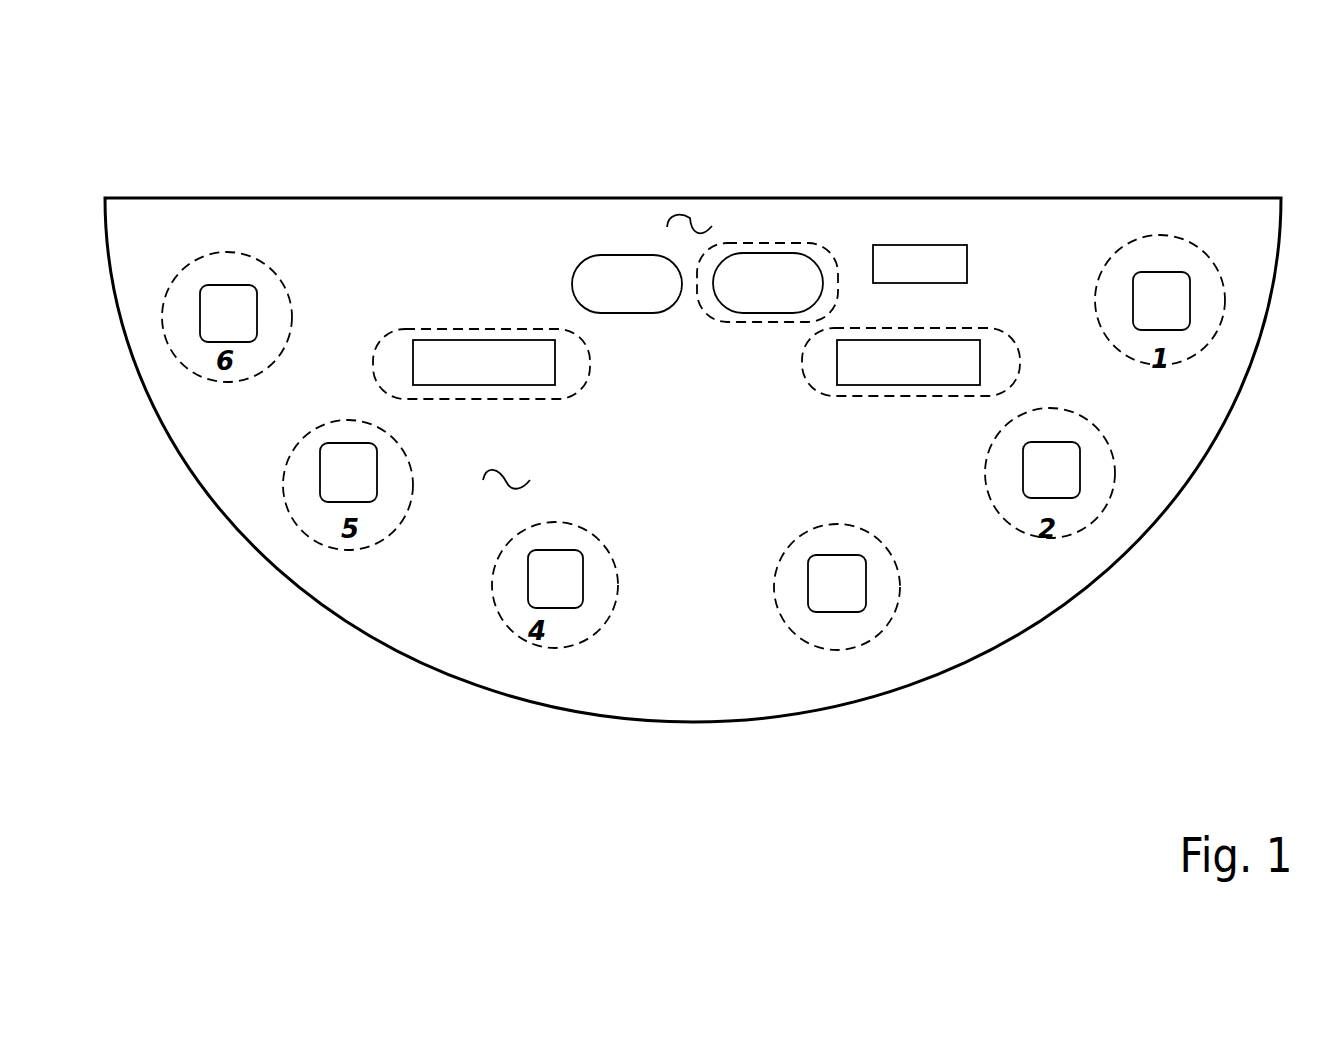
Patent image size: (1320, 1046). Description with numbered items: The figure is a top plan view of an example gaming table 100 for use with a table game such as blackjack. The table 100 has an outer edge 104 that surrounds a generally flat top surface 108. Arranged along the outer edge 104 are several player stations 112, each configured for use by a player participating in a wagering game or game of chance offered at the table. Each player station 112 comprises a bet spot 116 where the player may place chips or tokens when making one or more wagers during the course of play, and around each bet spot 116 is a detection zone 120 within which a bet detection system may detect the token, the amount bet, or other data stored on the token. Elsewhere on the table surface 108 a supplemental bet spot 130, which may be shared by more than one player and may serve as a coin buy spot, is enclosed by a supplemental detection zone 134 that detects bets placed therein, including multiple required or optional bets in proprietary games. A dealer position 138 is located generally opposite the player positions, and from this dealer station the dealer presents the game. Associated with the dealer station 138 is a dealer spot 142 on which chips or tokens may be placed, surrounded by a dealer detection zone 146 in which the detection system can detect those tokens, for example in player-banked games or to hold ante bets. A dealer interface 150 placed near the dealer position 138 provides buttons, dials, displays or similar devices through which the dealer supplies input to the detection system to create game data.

The table 100 is at (275, 602).
The outer edge 104 is at (547, 707).
The top surface 108 is at (507, 487).
The player station 112 is at (790, 660).
The bet spot 116 is at (866, 585).
The detection zone 120 is at (857, 648).
The supplemental bet spot 130 is at (440, 339).
The supplemental detection zone 134 is at (470, 327).
The dealer position 138 is at (690, 218).
The dealer spot 142 is at (807, 253).
The dealer detection zone 146 is at (761, 243).
The dealer interface 150 is at (920, 245).